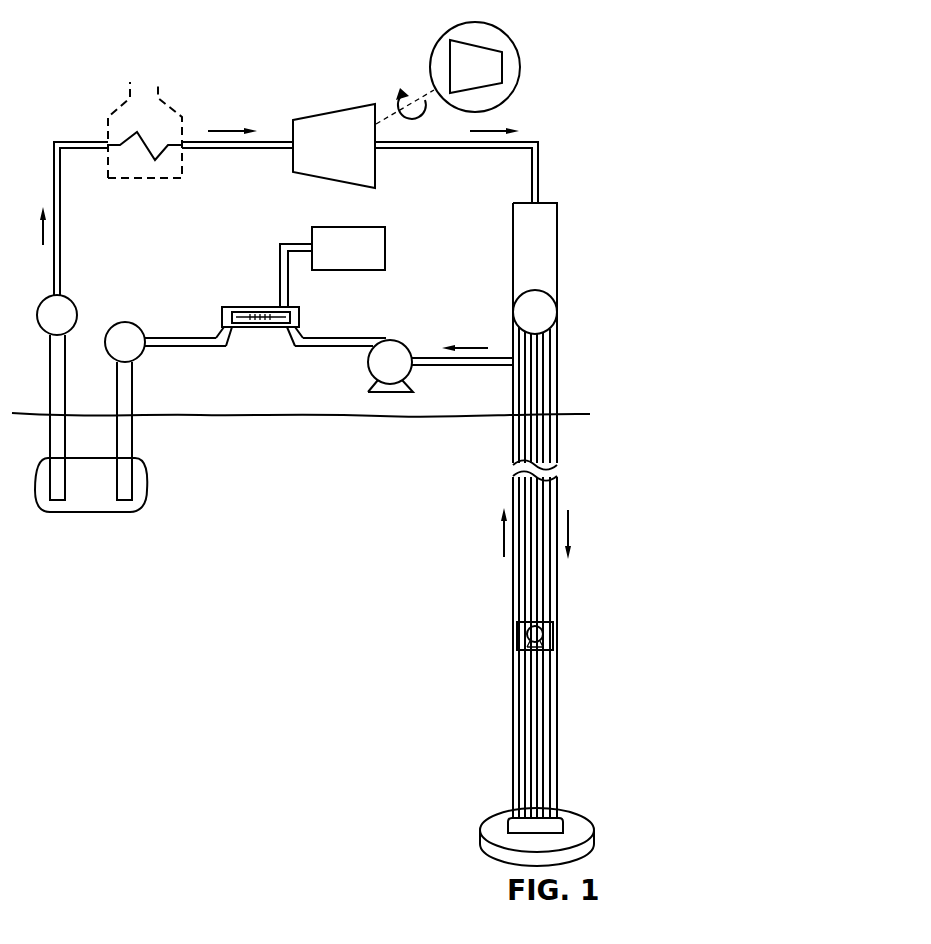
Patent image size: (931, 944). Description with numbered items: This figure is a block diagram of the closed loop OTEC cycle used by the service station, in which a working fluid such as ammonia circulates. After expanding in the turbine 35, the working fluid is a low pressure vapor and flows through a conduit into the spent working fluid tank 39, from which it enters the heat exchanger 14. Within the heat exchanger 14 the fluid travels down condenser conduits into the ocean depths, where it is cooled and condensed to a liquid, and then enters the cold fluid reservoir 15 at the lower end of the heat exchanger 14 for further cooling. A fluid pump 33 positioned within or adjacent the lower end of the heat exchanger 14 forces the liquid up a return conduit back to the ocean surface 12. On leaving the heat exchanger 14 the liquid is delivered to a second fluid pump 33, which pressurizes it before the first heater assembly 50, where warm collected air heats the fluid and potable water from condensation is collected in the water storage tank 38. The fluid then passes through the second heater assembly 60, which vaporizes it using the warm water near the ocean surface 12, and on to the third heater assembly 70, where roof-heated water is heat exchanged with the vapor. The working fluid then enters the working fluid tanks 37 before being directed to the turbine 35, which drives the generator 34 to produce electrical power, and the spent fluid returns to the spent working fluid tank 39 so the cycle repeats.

The ocean surface 12 is at (287, 418).
The heat exchanger 14 is at (513, 495).
The cold fluid reservoir 15 is at (486, 827).
The fluid pump 33 is at (402, 340).
The generator 34 is at (518, 45).
The turbine 35 is at (334, 119).
The working fluid tank 37 is at (114, 324).
The water storage tank 38 is at (369, 242).
The spent working fluid tank 39 is at (520, 233).
The first heater assembly 50 is at (243, 306).
The second heater assembly 60 is at (97, 514).
The third heater assembly 70 is at (124, 112).